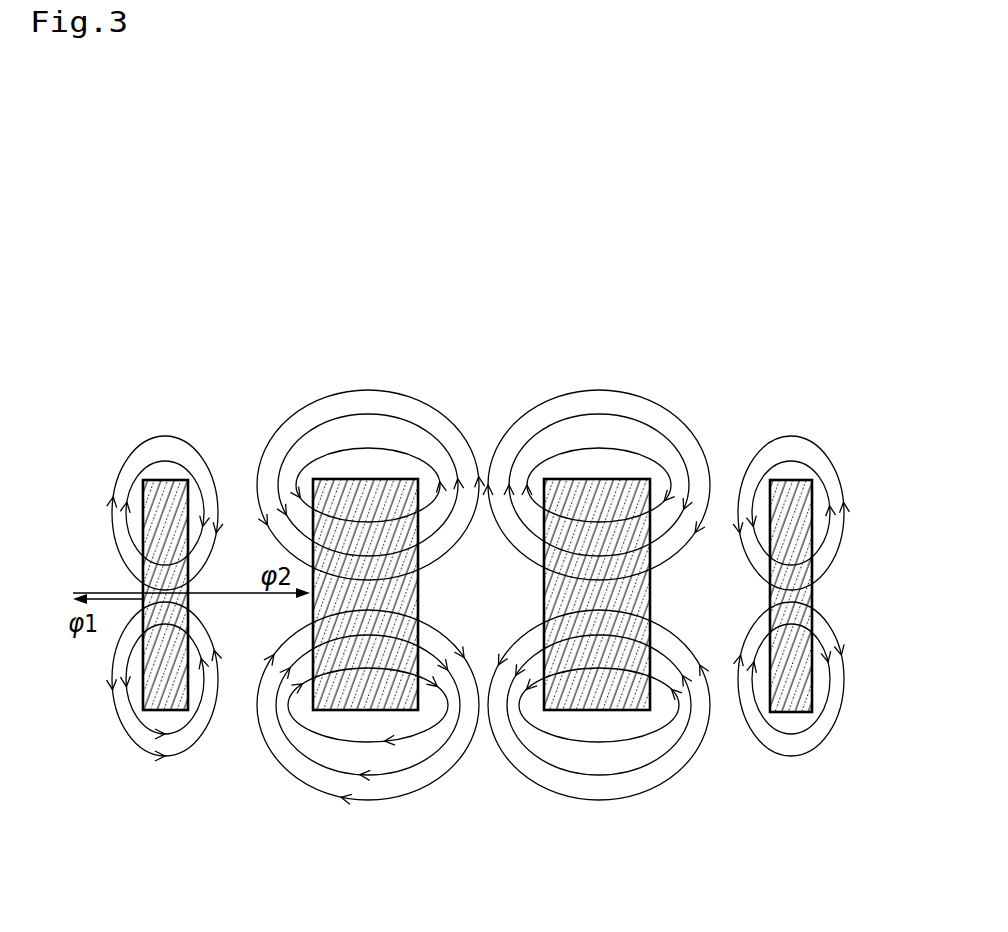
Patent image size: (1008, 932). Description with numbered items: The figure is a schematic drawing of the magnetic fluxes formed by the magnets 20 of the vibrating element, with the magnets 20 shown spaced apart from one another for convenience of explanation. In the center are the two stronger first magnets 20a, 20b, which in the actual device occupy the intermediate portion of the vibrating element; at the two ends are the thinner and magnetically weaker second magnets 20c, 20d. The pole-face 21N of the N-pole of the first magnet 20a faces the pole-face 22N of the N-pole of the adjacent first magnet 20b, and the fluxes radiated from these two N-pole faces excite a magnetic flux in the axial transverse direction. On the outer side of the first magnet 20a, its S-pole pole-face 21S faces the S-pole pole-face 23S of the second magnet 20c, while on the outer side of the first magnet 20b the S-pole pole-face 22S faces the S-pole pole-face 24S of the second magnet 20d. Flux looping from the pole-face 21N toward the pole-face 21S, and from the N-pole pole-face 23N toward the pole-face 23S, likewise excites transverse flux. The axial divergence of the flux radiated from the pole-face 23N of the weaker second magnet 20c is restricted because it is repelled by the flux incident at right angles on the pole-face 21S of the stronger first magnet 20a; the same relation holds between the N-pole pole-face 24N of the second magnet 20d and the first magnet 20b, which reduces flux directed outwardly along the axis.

The magnets 20 is at (156, 513).
The first magnet 20a is at (365, 516).
The first magnet 20b is at (595, 516).
The second magnet 20c is at (156, 513).
The second magnet 20d is at (800, 510).
The pole-face of the S-pole of the first magnet 20a 21S is at (313, 607).
The pole-face of the N-pole of the first magnet 20a 21N is at (418, 607).
The pole-face of the N-pole of the first magnet 20b 22N is at (544, 612).
The pole-face of the S-pole of the first magnet 20b 22S is at (650, 598).
The pole-face of the N-pole of the second magnet 20c 23N is at (143, 588).
The pole-face of the S-pole of the second magnet 20c 23S is at (188, 593).
The pole-face of the S-pole of the second magnet 20d 24S is at (770, 598).
The pole-face of the N-pole of the second magnet 20d 24N is at (812, 598).